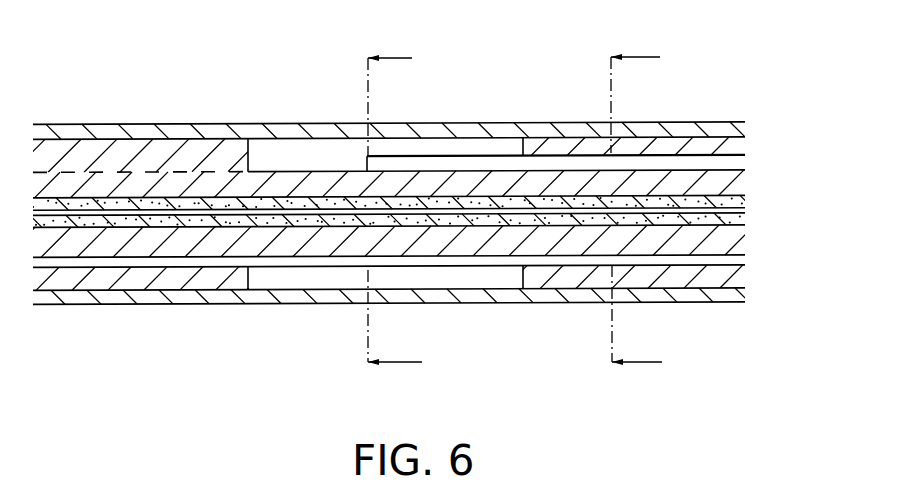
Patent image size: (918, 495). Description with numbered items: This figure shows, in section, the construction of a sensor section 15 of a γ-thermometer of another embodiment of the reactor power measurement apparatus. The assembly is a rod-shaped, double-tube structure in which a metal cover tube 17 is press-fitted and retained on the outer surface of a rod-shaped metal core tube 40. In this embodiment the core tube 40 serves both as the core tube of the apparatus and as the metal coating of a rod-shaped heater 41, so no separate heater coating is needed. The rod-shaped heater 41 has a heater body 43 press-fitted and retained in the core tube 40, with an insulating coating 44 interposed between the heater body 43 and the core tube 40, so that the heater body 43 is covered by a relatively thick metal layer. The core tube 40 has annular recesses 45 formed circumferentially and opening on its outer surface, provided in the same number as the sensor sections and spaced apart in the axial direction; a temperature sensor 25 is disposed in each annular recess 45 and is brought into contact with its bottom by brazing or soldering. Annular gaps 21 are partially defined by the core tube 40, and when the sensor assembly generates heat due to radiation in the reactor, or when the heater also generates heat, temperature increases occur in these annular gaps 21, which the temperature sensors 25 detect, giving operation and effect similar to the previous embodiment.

The sensor section 15 is at (425, 211).
The cover tube 17 is at (692, 122).
The annular gap 21 is at (330, 153).
The temperature sensor 25 is at (491, 150).
The core tube 40 is at (723, 145).
The rod-shaped heater 41 is at (435, 215).
The heater body 43 is at (417, 227).
The insulating coating 44 is at (745, 198).
The annular recess 45 is at (275, 170).